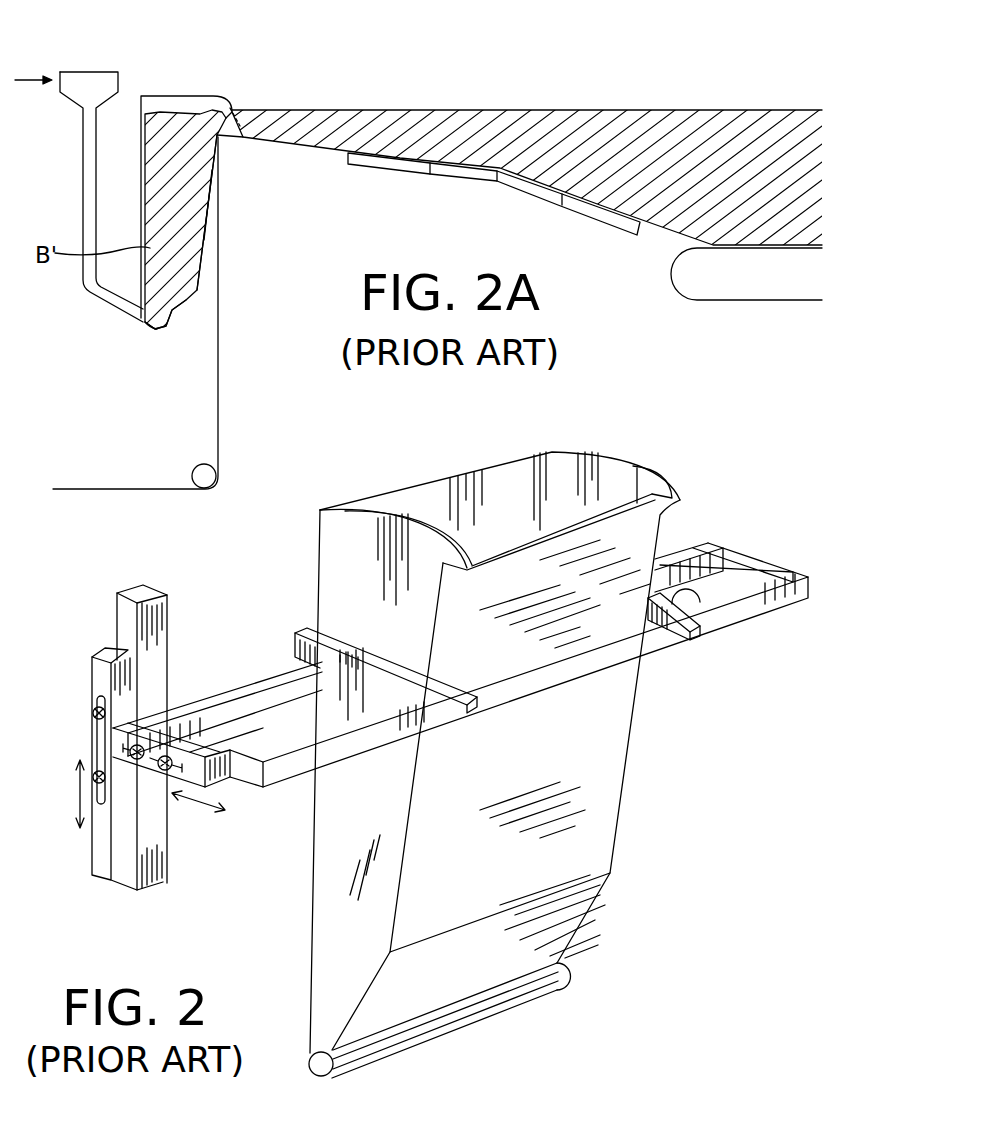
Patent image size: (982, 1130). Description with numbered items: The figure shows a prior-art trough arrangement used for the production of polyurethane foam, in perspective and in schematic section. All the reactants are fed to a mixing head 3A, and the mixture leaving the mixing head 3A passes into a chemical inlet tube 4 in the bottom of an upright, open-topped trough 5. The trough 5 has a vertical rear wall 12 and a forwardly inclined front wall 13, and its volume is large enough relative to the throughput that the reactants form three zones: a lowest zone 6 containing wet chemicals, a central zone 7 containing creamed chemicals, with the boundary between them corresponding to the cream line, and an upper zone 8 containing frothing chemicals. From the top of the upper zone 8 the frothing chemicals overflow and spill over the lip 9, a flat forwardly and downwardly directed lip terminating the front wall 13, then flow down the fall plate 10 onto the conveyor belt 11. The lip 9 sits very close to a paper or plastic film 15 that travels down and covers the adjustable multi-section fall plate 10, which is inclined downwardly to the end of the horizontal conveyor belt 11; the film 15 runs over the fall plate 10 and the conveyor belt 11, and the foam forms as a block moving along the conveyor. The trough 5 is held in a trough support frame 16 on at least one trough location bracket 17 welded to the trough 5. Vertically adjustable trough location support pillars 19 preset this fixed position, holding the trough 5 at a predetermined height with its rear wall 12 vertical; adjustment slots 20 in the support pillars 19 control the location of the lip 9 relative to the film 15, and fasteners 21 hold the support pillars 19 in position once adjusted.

In FIG. 2A, the mixing head 3A is at (118, 75).
In FIG. 2A, the chemical inlet tube 4 is at (165, 330).
In FIG. 2, the chemical inlet tube 4 is at (460, 1015).
In FIG. 2A, the open-topped trough 5 is at (132, 191).
In FIG. 2, the open-topped trough 5 is at (302, 540).
In FIG. 2A, the lowest zone 6 is at (163, 285).
In FIG. 2A, the central zone 7 is at (172, 207).
In FIG. 2A, the upper zone 8 is at (195, 125).
In FIG. 2A, the lip 9 is at (230, 108).
In FIG. 2, the lip 9 is at (637, 503).
In FIG. 2A, the fall plate 10 is at (420, 179).
In FIG. 2A, the conveyor belt 11 is at (740, 300).
In FIG. 2A, the rear wall 12 is at (141, 145).
In FIG. 2, the rear wall 12 is at (413, 486).
In FIG. 2A, the front wall 13 is at (200, 233).
In FIG. 2, the front wall 13 is at (583, 748).
In FIG. 2A, the film 15 is at (218, 390).
In FIG. 2, the trough support frame 16 is at (208, 693).
In FIG. 2, the trough location bracket 17 is at (312, 659).
In FIG. 2, the trough location support pillar 19 is at (118, 870).
In FIG. 2, the adjustment slot 20 is at (100, 737).
In FIG. 2, the fastener 21 is at (93, 710).